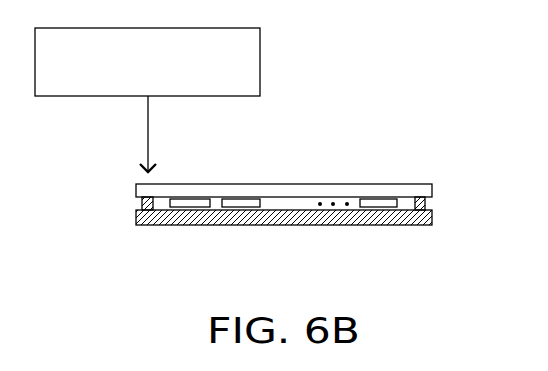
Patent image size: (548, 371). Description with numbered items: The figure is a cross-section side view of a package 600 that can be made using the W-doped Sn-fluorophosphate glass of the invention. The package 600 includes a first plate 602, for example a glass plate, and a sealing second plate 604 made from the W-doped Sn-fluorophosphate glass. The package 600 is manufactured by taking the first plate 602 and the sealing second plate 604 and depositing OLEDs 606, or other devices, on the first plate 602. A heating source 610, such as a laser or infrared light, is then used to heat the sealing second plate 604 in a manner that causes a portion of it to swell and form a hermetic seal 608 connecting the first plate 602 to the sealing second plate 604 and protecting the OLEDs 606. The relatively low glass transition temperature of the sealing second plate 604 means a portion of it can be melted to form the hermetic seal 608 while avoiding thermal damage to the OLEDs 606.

The package 600 is at (327, 70).
The first plate 602 is at (428, 185).
The sealing second plate 604 is at (415, 227).
The OLEDs 606 is at (292, 207).
The hermetic seal 608 is at (142, 205).
The heating source 610 is at (127, 78).